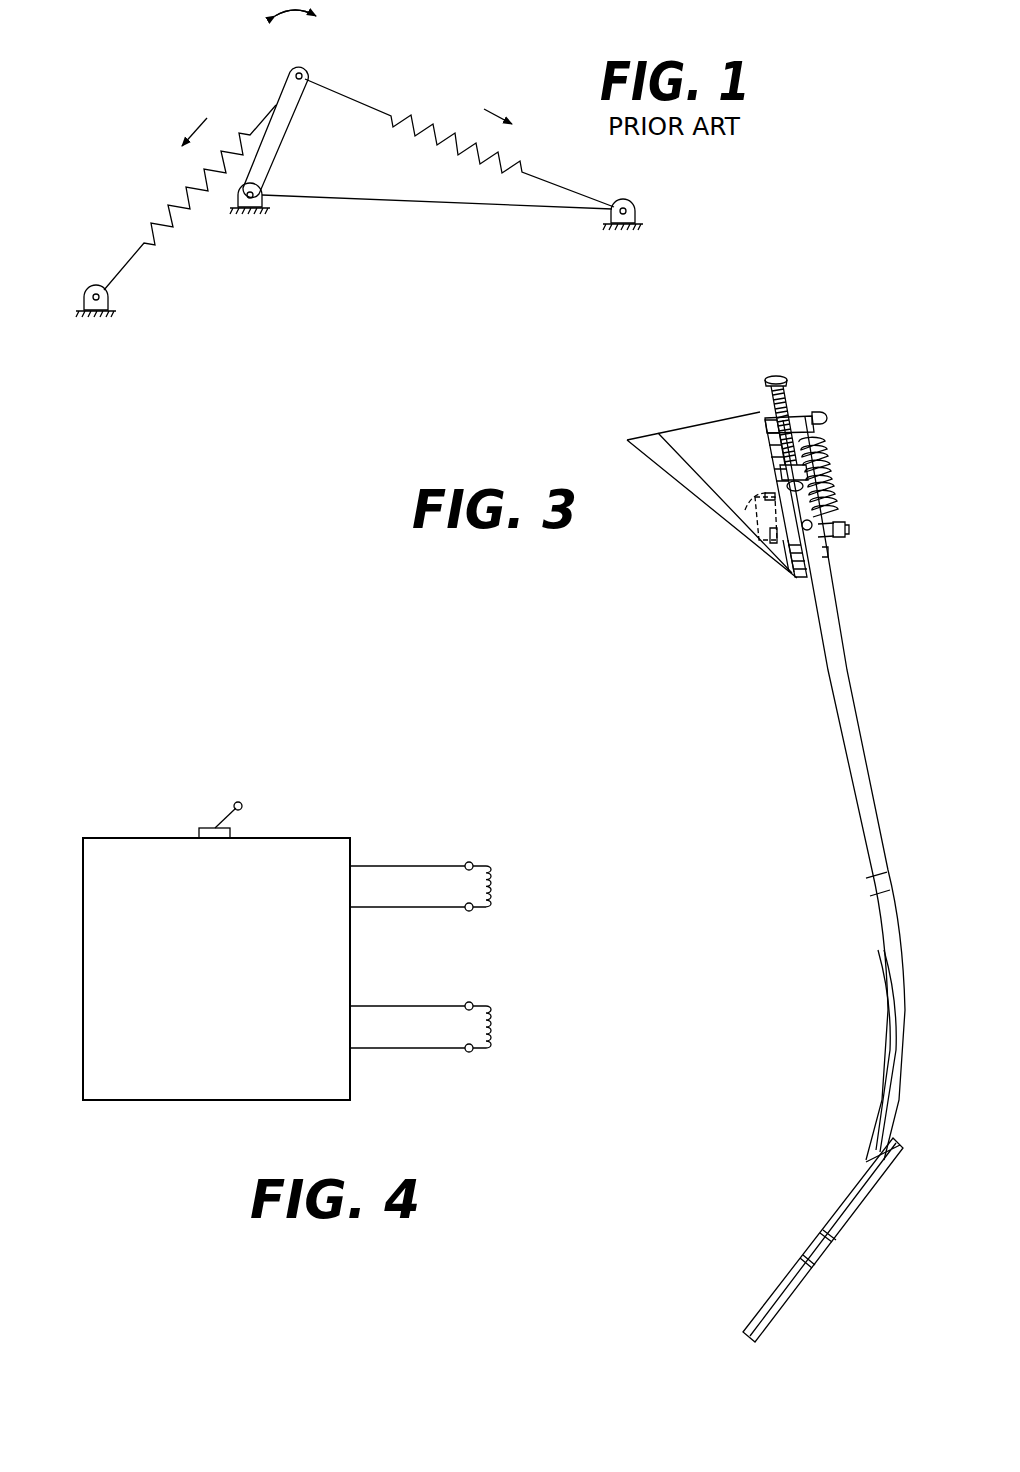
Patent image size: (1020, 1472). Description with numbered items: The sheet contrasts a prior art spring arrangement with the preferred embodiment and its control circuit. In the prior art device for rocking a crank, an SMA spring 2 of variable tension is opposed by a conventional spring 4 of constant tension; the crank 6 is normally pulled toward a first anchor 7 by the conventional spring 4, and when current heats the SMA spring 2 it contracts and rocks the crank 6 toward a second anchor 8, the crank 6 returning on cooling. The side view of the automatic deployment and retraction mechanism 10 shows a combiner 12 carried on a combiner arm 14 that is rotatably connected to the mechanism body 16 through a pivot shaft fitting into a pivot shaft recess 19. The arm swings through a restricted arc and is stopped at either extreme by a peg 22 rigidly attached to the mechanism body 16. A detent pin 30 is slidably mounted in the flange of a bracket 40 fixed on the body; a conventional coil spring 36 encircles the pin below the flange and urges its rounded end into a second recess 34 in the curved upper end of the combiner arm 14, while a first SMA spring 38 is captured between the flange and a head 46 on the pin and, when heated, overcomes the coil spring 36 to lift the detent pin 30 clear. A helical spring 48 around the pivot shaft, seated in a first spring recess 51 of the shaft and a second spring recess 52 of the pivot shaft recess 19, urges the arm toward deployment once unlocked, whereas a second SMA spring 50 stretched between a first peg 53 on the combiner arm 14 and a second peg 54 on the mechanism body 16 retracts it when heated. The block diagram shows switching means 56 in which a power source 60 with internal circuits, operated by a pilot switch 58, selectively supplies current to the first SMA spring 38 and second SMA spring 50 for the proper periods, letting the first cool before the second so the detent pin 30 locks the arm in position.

In FIG. 1, the SMA spring 2 is at (440, 118).
In FIG. 1, the conventional spring 4 is at (182, 192).
In FIG. 1, the crank 6 is at (305, 70).
In FIG. 1, the first anchor 7 is at (90, 293).
In FIG. 1, the second anchor 8 is at (634, 204).
In FIG. 3, the automatic deployment and retraction mechanism 10 is at (840, 295).
In FIG. 3, the combiner 12 is at (822, 1260).
In FIG. 3, the combiner arm 14 is at (863, 783).
In FIG. 3, the mechanism body 16 is at (690, 418).
In FIG. 3, the pivot shaft recess 19 is at (778, 530).
In FIG. 3, the peg 22 is at (828, 556).
In FIG. 3, the detent pin 30 is at (803, 413).
In FIG. 3, the second recess 34 is at (820, 522).
In FIG. 3, the conventional coil spring 36 is at (802, 447).
In FIG. 3, the first SMA spring 38 is at (768, 398).
In FIG. 4, the first SMA spring 38 is at (494, 903).
In FIG. 3, the bracket 40 is at (776, 442).
In FIG. 3, the head 46 is at (783, 378).
In FIG. 3, the helical spring 48 is at (779, 548).
In FIG. 3, the second SMA spring 50 is at (828, 466).
In FIG. 4, the second SMA spring 50 is at (494, 1043).
In FIG. 3, the first spring recess 51 is at (770, 517).
In FIG. 3, the second spring recess 52 is at (765, 500).
In FIG. 3, the first peg 53 is at (850, 531).
In FIG. 3, the second peg 54 is at (822, 415).
In FIG. 4, the switching means 56 is at (361, 769).
In FIG. 4, the switch 58 is at (220, 822).
In FIG. 4, the power source 60 is at (216, 969).